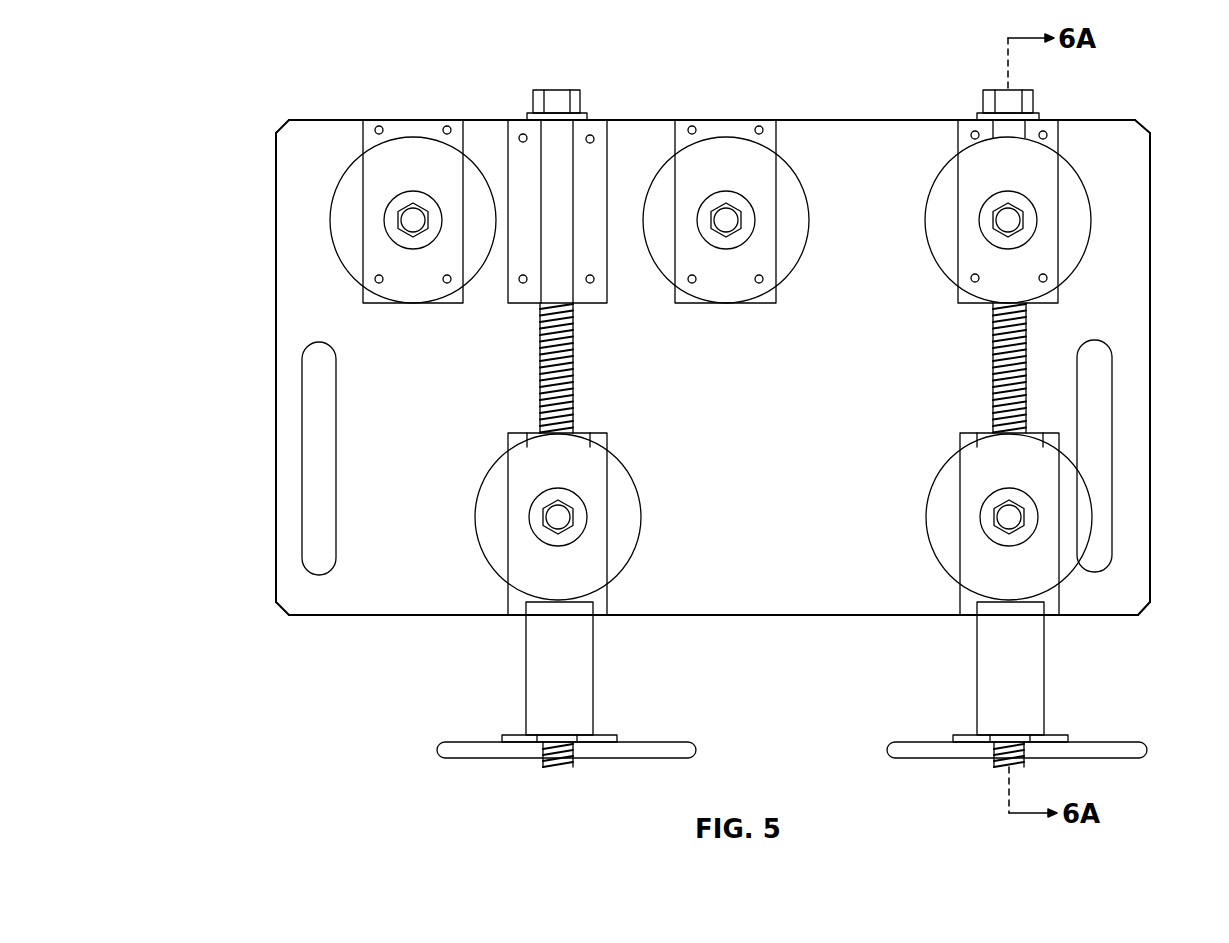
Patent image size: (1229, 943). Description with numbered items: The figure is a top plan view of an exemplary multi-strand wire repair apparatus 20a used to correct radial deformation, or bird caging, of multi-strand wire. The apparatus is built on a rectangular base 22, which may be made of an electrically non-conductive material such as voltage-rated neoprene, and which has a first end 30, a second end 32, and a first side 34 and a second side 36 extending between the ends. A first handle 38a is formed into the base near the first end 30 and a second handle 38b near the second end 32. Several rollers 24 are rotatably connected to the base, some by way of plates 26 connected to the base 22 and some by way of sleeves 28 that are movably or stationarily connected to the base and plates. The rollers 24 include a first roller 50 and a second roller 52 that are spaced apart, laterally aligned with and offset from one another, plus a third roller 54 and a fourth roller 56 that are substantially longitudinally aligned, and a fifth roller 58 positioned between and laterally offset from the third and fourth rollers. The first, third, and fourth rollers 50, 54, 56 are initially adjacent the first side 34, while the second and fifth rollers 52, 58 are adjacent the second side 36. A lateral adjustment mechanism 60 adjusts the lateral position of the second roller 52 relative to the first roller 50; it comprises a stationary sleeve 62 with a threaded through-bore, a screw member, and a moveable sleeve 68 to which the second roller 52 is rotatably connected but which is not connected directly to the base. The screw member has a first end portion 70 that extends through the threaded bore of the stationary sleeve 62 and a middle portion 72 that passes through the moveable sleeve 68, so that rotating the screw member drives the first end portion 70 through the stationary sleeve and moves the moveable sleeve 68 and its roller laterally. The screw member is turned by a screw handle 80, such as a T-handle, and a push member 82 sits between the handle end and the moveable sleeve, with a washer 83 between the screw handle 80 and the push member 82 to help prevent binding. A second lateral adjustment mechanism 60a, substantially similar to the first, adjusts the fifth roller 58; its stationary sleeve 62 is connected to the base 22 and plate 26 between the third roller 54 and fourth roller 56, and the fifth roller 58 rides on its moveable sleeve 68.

The repair apparatus 20a is at (893, 58).
The base 22 is at (298, 617).
The rollers 24 is at (413, 150).
The plates 26 is at (380, 303).
The sleeves 28 is at (577, 172).
The first end 30 is at (276, 300).
The second end 32 is at (1150, 355).
The first side 34 is at (800, 120).
The second side 36 is at (778, 617).
The first handle 38a is at (302, 392).
The second handle 38b is at (1083, 565).
The first roller 50 is at (1072, 165).
The second roller 52 is at (945, 460).
The third roller 54 is at (350, 170).
The fourth roller 56 is at (785, 165).
The fifth roller 58 is at (490, 470).
The lateral adjustment mechanism 60 is at (1010, 762).
The second lateral adjustment mechanism 60a is at (558, 762).
The stationary sleeve 62 is at (540, 183).
The moveable sleeve 68 is at (515, 602).
The first end portion 70 is at (523, 137).
The middle portion 72 is at (552, 412).
The screw handle 80 is at (492, 742).
The push member 82 is at (526, 700).
The washer 83 is at (617, 737).